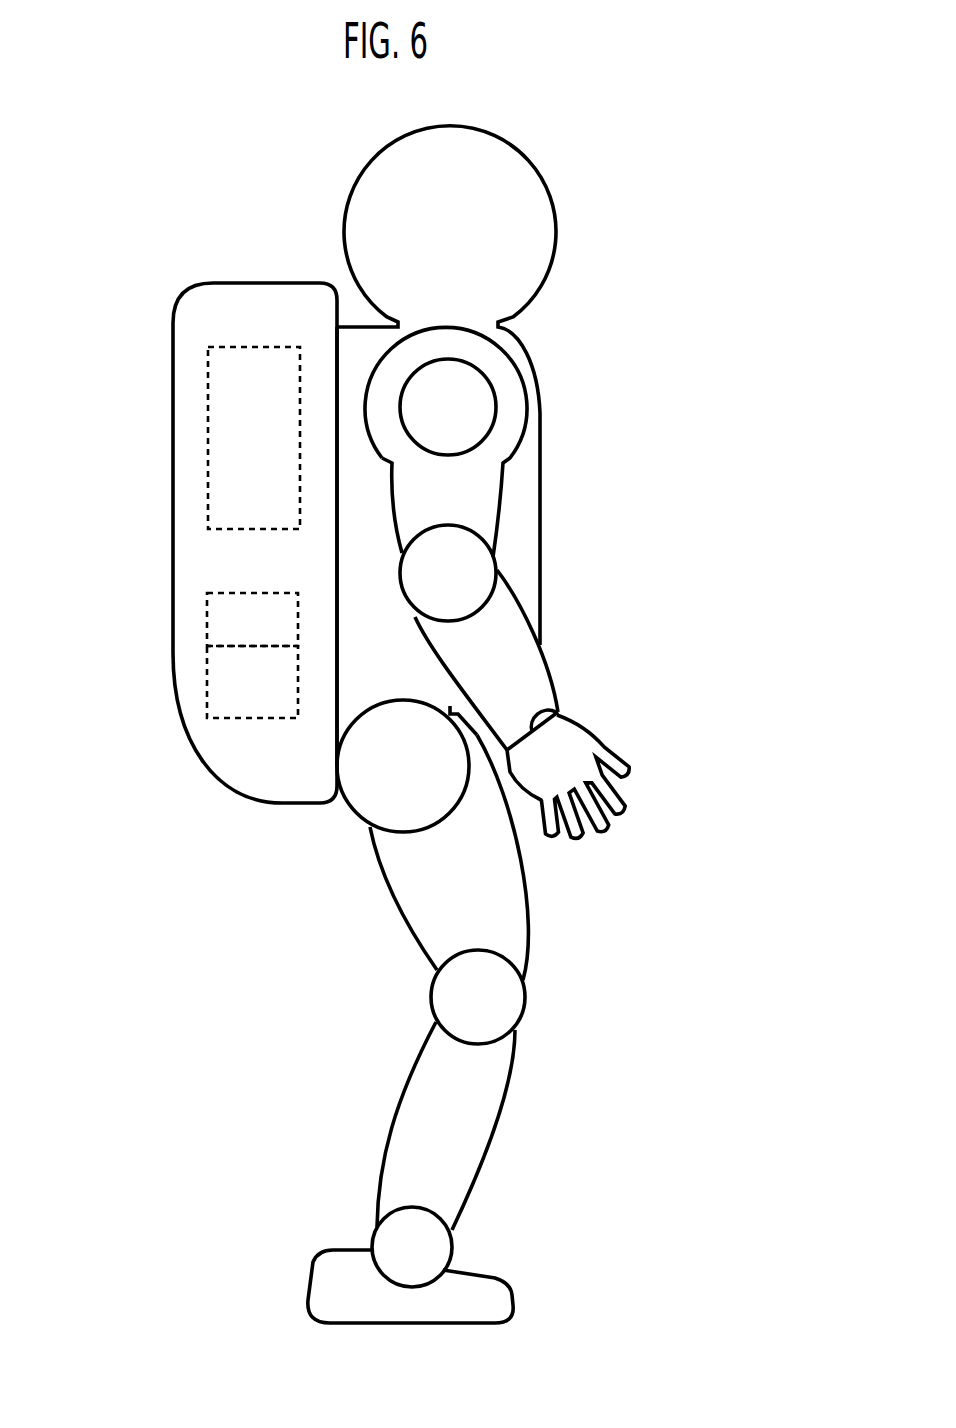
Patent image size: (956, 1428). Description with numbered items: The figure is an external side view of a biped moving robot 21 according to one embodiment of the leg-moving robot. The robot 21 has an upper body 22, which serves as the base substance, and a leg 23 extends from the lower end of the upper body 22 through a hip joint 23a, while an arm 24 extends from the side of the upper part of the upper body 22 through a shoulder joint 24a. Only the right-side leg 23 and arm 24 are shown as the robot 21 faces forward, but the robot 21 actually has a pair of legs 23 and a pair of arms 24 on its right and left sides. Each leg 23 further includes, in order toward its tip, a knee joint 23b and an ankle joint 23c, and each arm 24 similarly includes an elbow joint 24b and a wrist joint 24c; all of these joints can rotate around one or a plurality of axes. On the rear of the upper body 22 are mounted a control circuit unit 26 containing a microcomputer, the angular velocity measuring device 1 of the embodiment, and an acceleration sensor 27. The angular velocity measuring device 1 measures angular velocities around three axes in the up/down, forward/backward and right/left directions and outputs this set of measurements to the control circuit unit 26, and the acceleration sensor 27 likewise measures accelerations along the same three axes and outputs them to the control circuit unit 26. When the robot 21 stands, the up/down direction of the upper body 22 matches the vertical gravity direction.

The biped moving robot 21 is at (600, 170).
The upper body 22 is at (172, 493).
The control circuit unit 26 is at (208, 383).
The acceleration sensor 27 is at (207, 618).
The angular velocity measuring device 1 is at (207, 682).
The arm 24 is at (508, 503).
The shoulder joint 24a is at (455, 405).
The elbow joint 24b is at (458, 575).
The wrist joint 24c is at (535, 728).
The leg 23 is at (507, 1143).
The hip joint 23a is at (400, 773).
The knee joint 23b is at (487, 1000).
The ankle joint 23c is at (410, 1243).